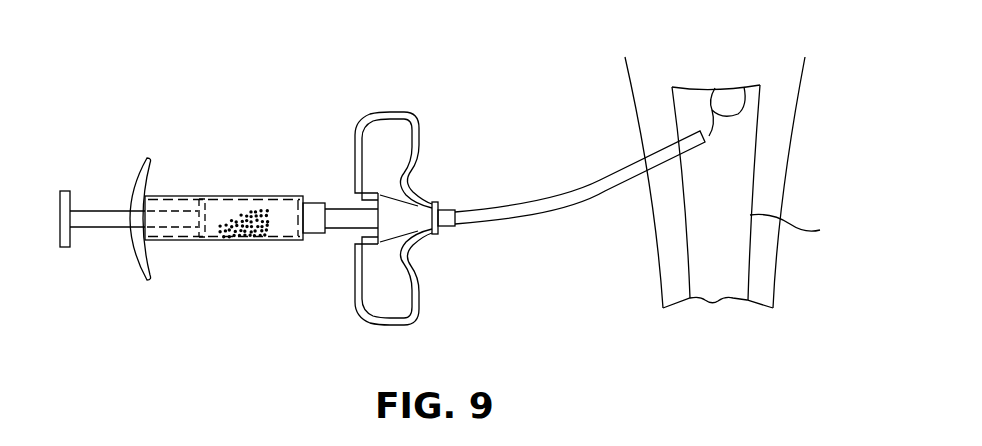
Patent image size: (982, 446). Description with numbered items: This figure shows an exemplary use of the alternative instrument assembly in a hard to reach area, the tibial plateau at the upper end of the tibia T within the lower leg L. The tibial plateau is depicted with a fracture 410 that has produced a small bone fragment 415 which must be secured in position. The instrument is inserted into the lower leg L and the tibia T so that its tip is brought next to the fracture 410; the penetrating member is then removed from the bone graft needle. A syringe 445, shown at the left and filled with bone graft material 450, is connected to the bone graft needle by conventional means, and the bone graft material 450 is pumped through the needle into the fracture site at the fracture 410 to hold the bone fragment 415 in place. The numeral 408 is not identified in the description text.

The syringe 445 is at (222, 196).
The bone graft material 450 is at (265, 229).
The bone fragment 415 is at (695, 107).
The bone 408 is at (722, 90).
The fracture 410 is at (747, 100).
The lower leg L is at (790, 125).
The tibia T is at (750, 215).